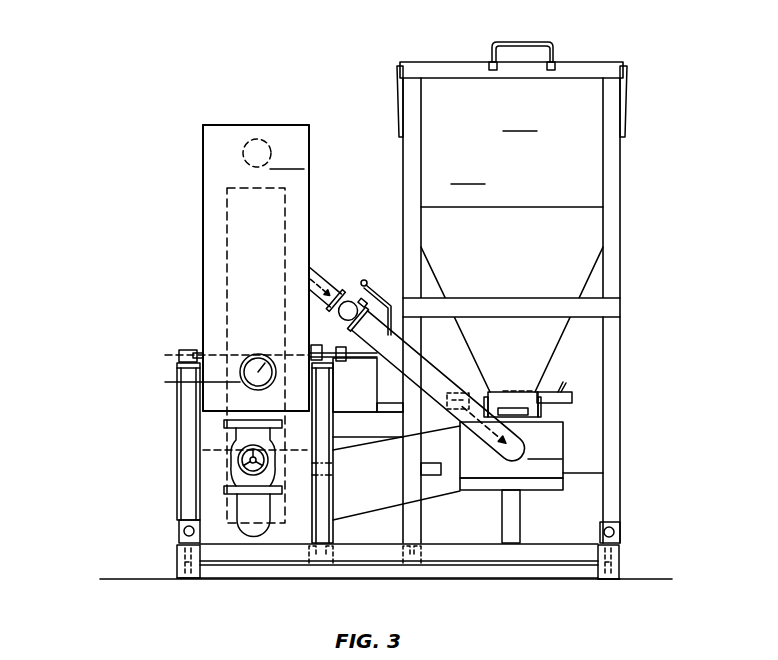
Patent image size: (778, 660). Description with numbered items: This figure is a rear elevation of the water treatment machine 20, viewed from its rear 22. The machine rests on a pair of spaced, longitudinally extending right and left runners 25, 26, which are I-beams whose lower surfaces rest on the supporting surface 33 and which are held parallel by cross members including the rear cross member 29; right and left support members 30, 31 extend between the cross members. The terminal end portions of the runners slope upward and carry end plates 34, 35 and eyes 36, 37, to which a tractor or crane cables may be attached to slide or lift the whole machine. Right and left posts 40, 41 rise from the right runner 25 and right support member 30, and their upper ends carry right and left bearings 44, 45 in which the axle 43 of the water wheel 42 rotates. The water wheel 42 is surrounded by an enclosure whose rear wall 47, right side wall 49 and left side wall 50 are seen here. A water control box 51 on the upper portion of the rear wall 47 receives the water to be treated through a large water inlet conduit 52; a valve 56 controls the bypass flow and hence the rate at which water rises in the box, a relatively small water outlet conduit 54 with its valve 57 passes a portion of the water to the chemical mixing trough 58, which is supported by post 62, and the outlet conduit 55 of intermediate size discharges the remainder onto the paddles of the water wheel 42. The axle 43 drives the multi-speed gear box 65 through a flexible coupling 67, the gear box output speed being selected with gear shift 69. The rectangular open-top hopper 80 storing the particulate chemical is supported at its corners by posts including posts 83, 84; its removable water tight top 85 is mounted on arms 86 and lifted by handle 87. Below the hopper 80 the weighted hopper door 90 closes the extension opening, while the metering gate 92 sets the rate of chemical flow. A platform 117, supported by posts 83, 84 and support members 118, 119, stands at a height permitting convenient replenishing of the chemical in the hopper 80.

The water treatment machine 20 is at (138, 180).
The rear 22 is at (503, 235).
The right runner 25 is at (176, 553).
The left runner 26 is at (619, 555).
The rear cross member 29 is at (568, 556).
The right support member 30 is at (320, 565).
The left support member 31 is at (414, 565).
The supporting surface 33 is at (105, 578).
The end plate 34 is at (178, 567).
The end plate 35 is at (620, 575).
The eye 36 is at (183, 530).
The eye 37 is at (620, 531).
The right post 40 is at (180, 440).
The left post 41 is at (333, 482).
The water wheel 42 is at (228, 222).
The axle 43 is at (198, 352).
The right bearing 44 is at (179, 355).
The left bearing 45 is at (311, 348).
The rear wall 47 is at (273, 154).
The right side wall 49 is at (202, 262).
The left side wall 50 is at (310, 226).
The water control box 51 is at (300, 190).
The water inlet conduit 52 is at (258, 353).
The small water outlet conduit 54 is at (320, 280).
The water outlet conduit 55 is at (243, 148).
The valve 56 is at (240, 458).
The valve 57 is at (350, 308).
The chemical mixing trough 58 is at (511, 456).
The post 62 is at (520, 521).
The multi-speed gear box 65 is at (385, 387).
The flexible coupling 67 is at (342, 362).
The gear shift 69 is at (392, 310).
The hopper 80 is at (512, 157).
The post 83 is at (403, 150).
The post 84 is at (620, 190).
The top 85 is at (600, 62).
The arm 86 is at (628, 90).
The handle 87 is at (553, 45).
The hopper door 90 is at (540, 412).
The metering gate 92 is at (545, 390).
The platform 117 is at (620, 307).
The support member 118 is at (421, 516).
The support member 119 is at (620, 425).